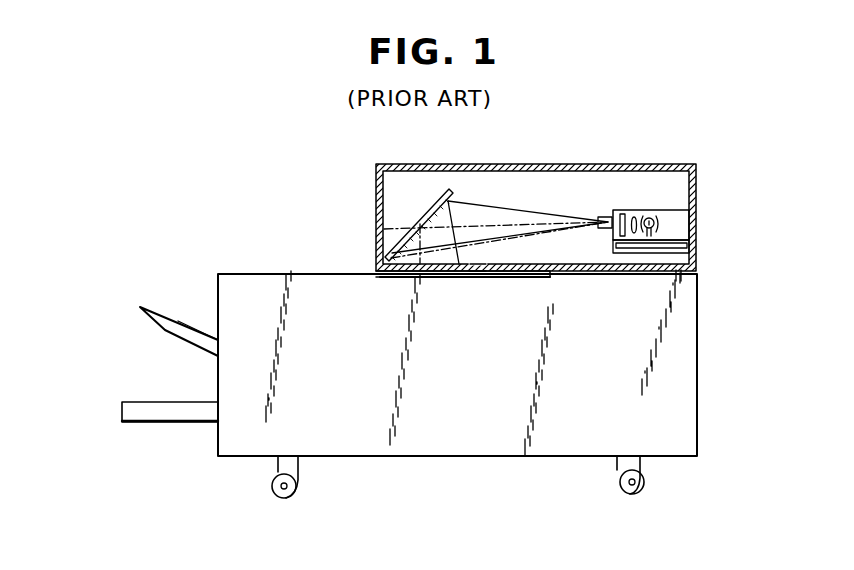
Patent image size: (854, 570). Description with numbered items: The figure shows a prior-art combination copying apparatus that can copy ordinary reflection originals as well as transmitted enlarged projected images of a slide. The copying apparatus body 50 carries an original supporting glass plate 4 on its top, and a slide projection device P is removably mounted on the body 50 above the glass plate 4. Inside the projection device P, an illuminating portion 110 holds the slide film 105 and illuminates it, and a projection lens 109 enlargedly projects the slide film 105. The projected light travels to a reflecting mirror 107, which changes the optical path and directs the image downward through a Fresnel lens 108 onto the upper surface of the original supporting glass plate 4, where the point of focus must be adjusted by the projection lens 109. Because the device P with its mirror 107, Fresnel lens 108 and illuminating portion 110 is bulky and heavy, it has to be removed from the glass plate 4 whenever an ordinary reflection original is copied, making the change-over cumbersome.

The copying apparatus body 50 is at (699, 313).
The slide projection device P is at (675, 164).
The original supporting glass plate 4 is at (497, 279).
The reflecting mirror 107 is at (400, 232).
The projection lens 109 is at (600, 216).
The Fresnel lens 108 is at (479, 264).
The slide film 105 is at (618, 210).
The illuminating portion 110 is at (686, 210).